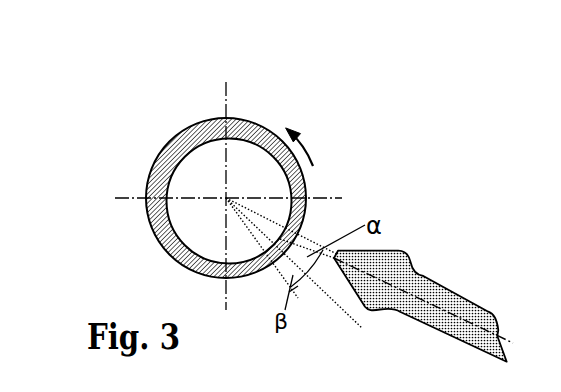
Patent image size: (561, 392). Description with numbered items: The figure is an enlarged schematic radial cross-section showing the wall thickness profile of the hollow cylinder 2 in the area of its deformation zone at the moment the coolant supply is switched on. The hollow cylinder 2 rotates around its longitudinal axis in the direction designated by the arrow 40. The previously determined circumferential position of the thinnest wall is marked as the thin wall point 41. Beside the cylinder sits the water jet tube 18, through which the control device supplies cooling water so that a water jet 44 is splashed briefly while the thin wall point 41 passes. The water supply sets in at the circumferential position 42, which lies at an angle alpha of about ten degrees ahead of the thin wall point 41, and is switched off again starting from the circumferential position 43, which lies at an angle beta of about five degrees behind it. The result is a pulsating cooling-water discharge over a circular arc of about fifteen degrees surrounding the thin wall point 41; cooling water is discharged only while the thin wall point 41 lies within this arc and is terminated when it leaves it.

The hollow cylinder 2 is at (168, 143).
The water jet tube 18 is at (433, 283).
The arrow 40 is at (310, 152).
The thin wall point 41 is at (345, 312).
The circumferential position 42 is at (470, 322).
The circumferential position 43 is at (295, 261).
The water jet 44 is at (318, 237).